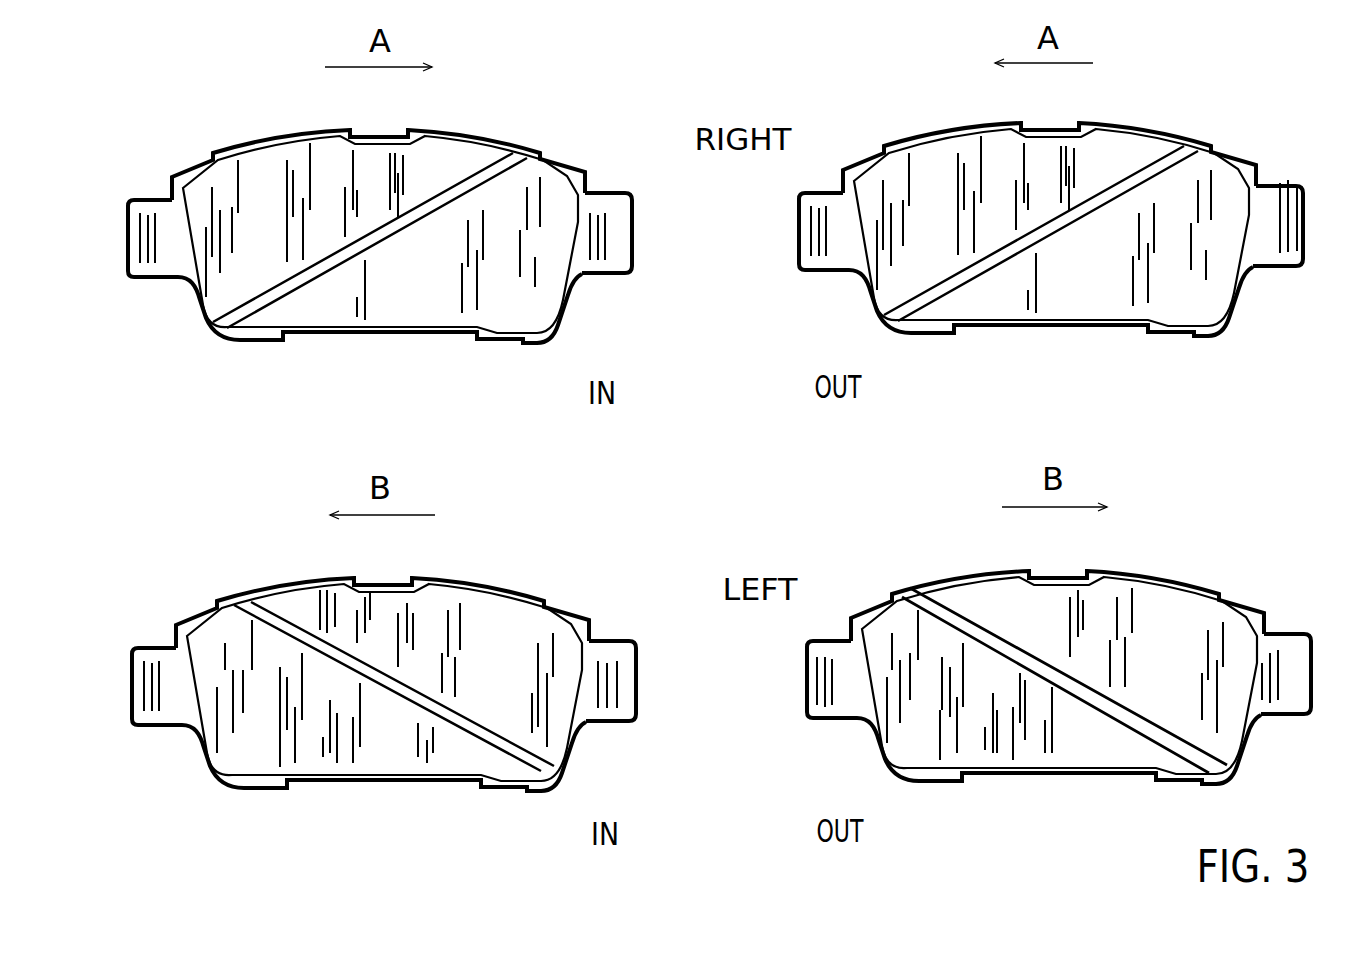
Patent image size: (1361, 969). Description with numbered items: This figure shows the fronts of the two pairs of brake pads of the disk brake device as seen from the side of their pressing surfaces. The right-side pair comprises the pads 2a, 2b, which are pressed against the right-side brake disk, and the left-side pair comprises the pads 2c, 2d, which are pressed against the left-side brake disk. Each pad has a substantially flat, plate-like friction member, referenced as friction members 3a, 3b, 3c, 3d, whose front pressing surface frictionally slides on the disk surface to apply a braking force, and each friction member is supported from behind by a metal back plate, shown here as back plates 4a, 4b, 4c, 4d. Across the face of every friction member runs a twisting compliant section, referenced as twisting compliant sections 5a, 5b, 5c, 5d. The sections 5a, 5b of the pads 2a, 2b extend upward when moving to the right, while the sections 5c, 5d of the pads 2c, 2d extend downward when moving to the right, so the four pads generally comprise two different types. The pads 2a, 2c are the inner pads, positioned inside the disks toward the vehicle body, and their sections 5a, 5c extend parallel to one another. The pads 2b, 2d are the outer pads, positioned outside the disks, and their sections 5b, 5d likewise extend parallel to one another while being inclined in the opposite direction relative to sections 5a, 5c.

The pad 2a is at (201, 142).
The friction member 3a is at (462, 163).
The back plate 4a is at (612, 207).
The twisting compliant section 5a is at (400, 233).
The pad 2b is at (1027, 202).
The friction member 3b is at (1051, 194).
The back plate 4b is at (1292, 191).
The twisting compliant section 5b is at (1041, 267).
The pad 2c is at (360, 654).
The friction member 3c is at (384, 644).
The back plate 4c is at (622, 644).
The twisting compliant section 5c is at (394, 722).
The pad 2d is at (1035, 646).
The friction member 3d is at (1059, 642).
The back plate 4d is at (1297, 640).
The twisting compliant section 5d is at (1064, 715).